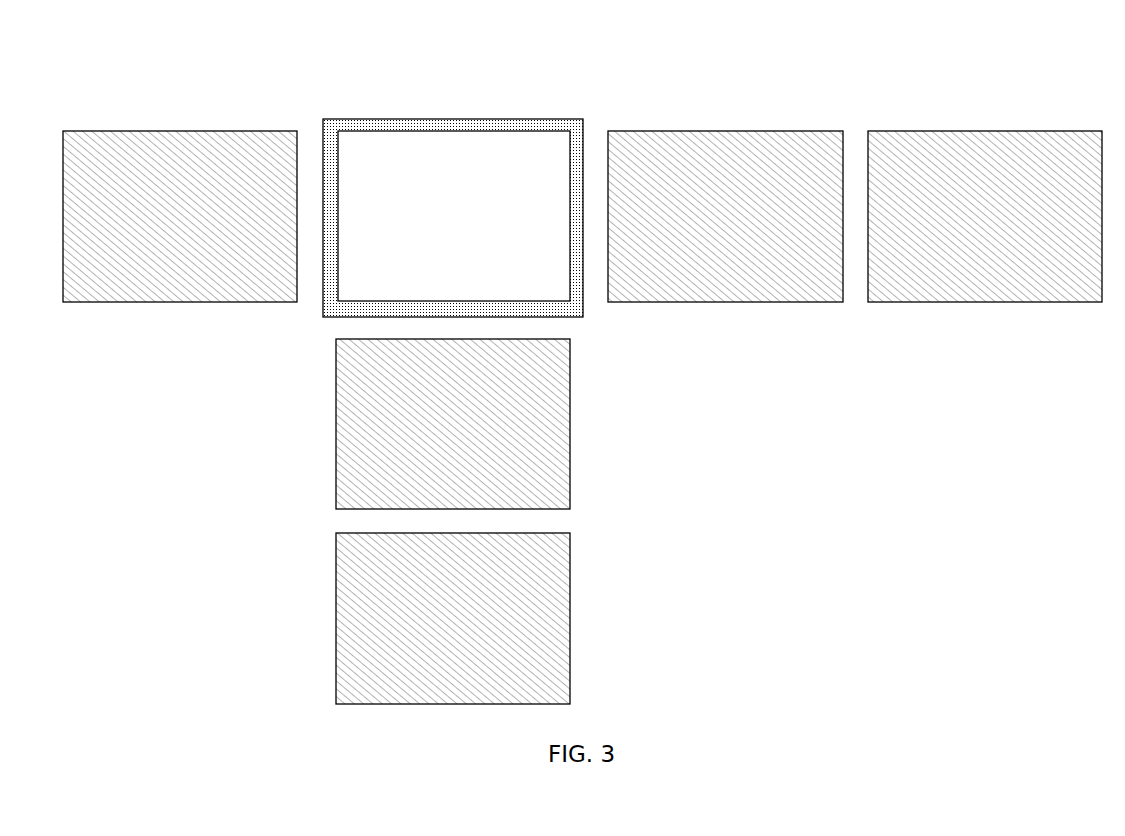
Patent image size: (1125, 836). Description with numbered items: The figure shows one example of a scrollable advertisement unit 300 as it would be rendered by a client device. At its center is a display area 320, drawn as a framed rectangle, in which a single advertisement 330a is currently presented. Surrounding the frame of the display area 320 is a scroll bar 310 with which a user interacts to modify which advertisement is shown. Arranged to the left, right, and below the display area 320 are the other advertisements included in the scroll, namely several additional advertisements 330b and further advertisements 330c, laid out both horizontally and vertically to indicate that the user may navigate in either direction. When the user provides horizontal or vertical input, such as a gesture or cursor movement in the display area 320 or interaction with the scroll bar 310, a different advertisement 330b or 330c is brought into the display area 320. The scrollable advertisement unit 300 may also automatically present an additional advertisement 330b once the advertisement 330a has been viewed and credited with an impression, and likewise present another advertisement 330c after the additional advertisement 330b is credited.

The scrollable advertisement unit 300 is at (103, 48).
The scroll bar 310 is at (335, 119).
The display area 320 is at (418, 131).
The advertisement 330a is at (472, 224).
The additional advertisement 330b is at (201, 224).
The another advertisement 330c is at (1004, 224).